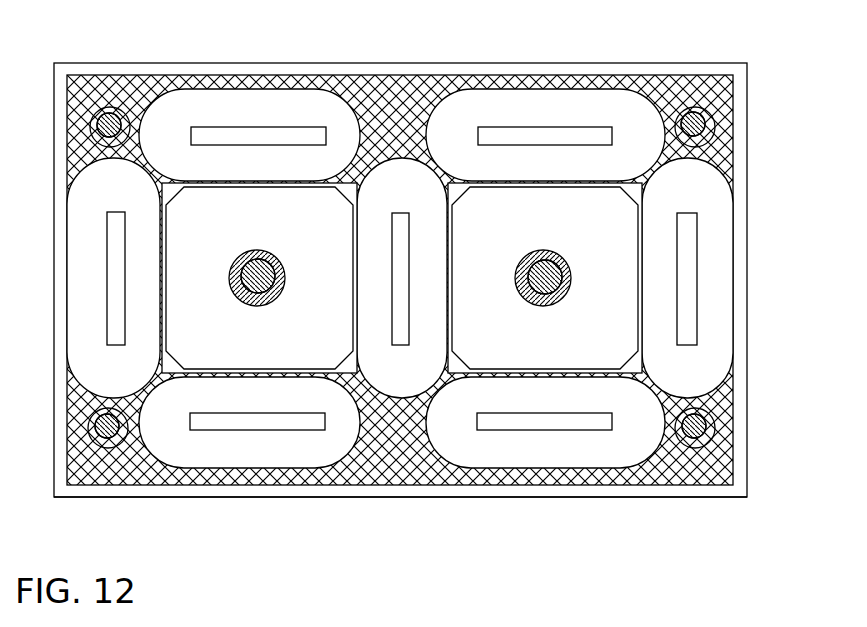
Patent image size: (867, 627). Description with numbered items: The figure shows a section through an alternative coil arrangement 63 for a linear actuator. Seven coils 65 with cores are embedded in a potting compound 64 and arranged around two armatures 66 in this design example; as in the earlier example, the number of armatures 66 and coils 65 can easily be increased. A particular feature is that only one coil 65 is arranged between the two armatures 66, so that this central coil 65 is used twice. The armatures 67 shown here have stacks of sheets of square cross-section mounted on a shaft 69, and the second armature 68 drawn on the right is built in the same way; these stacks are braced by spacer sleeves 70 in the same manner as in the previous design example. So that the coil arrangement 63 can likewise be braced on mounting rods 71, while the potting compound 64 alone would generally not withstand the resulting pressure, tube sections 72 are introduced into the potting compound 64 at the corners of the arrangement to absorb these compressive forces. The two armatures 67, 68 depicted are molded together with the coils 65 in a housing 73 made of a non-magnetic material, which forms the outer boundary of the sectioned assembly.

The coil arrangement 63 is at (134, 64).
The potting compound 64 is at (392, 100).
The coil 65 is at (245, 102).
The armature 66 is at (270, 130).
The armature 67 is at (264, 375).
The right square pad 68 is at (478, 208).
The shaft 69 is at (552, 305).
The spacer sleeve 70 is at (530, 305).
The mounting rod 71 is at (703, 76).
The tube section 72 is at (684, 100).
The housing 73 is at (695, 498).